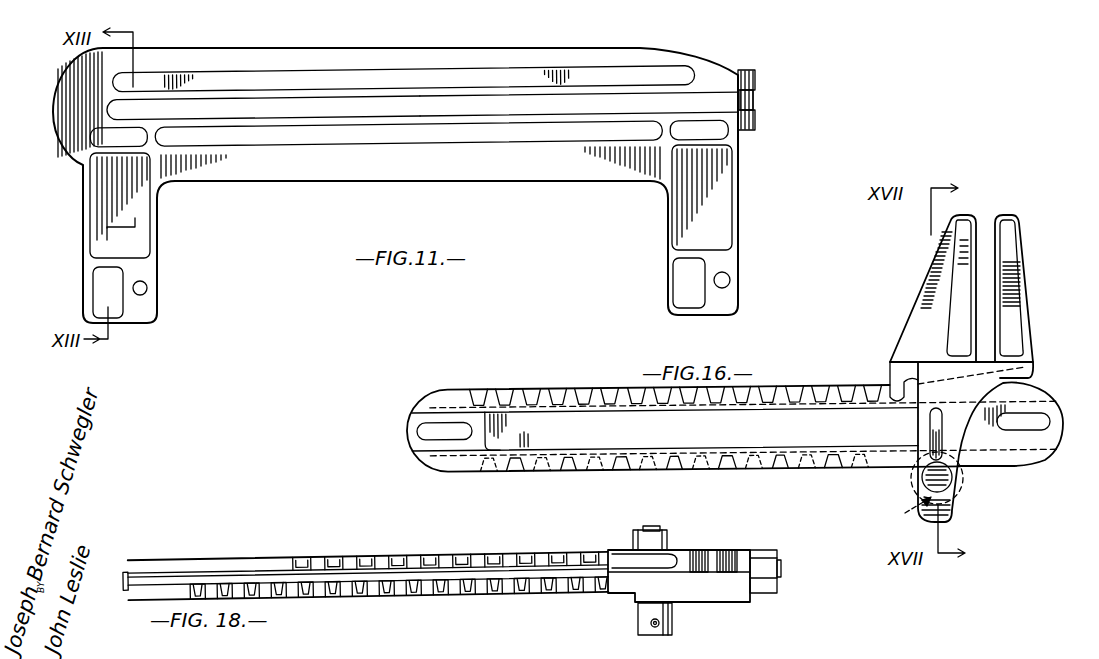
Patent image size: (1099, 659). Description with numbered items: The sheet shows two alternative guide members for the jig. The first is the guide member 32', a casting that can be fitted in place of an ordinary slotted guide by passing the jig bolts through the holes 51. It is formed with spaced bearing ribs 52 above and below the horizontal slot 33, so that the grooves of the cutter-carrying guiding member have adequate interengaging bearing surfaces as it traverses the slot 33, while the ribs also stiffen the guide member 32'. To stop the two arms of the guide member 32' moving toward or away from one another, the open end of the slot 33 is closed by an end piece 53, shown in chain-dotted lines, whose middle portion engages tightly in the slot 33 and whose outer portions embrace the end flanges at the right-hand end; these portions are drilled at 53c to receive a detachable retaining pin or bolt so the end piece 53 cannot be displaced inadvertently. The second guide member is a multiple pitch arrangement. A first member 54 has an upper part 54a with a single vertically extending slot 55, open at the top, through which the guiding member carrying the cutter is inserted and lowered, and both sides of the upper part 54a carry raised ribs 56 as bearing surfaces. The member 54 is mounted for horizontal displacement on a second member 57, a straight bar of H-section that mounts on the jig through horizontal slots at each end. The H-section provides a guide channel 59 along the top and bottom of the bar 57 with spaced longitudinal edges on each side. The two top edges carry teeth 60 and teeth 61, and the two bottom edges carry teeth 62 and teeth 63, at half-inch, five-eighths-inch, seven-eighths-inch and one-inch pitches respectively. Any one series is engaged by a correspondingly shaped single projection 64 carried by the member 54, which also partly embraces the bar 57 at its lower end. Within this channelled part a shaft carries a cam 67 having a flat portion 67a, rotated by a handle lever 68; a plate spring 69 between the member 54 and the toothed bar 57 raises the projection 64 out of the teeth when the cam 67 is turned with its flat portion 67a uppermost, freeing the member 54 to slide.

In FIG. 11, the guide member 32' is at (395, 185).
In FIG. 11, the horizontal slot 33 is at (288, 108).
In FIG. 11, the holes 51 is at (147, 288).
In FIG. 11, the bearing ribs 52 is at (408, 92).
In FIG. 11, the end piece 53 is at (740, 98).
In FIG. 11, the drilled hole 53c is at (756, 98).
In FIG. 16, the first member 54 is at (1022, 366).
In FIG. 18, the first member 54 is at (717, 594).
In FIG. 16, the upper part 54a is at (1022, 257).
In FIG. 18, the upper part 54a is at (744, 557).
In FIG. 16, the vertically extending slot 55 is at (982, 246).
In FIG. 18, the vertically extending slot 55 is at (707, 557).
In FIG. 16, the raised ribs 56 is at (973, 290).
In FIG. 16, the second member 57 is at (565, 436).
In FIG. 18, the guide channel 59 is at (357, 579).
In FIG. 18, the teeth 60 is at (450, 597).
In FIG. 18, the teeth 61 is at (528, 557).
In FIG. 16, the teeth 62 is at (812, 466).
In FIG. 16, the teeth 63 is at (698, 463).
In FIG. 16, the tooth or projection 64 is at (896, 382).
In FIG. 16, the cam 67 is at (912, 476).
In FIG. 16, the flat portion 67a is at (902, 515).
In FIG. 16, the handle lever 68 is at (934, 427).
In FIG. 18, the handle lever 68 is at (651, 623).
In FIG. 16, the plate spring 69 is at (938, 378).